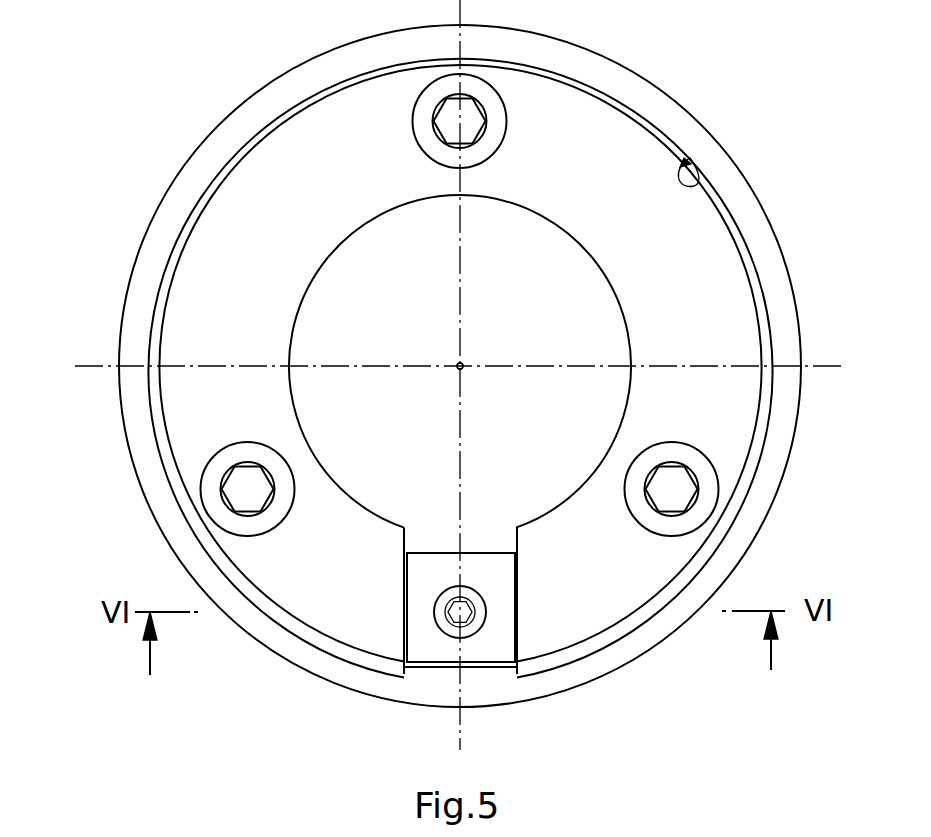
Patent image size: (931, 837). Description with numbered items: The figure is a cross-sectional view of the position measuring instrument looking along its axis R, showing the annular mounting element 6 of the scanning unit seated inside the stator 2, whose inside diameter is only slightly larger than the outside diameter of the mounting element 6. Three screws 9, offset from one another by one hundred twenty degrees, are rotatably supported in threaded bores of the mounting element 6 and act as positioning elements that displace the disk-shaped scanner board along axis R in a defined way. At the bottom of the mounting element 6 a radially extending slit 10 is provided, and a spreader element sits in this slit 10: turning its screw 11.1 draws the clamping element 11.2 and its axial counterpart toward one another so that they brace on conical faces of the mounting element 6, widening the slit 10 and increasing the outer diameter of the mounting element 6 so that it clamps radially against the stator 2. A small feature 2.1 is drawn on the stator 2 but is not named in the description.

The stator 2 is at (652, 99).
The projection on ring 2.1 is at (707, 180).
The mounting element 6 is at (698, 250).
The screw 9 is at (497, 122).
The slit 10 is at (438, 543).
The screw 11.1 is at (447, 625).
The clamping element 11.2 is at (495, 647).
The axis R is at (463, 368).